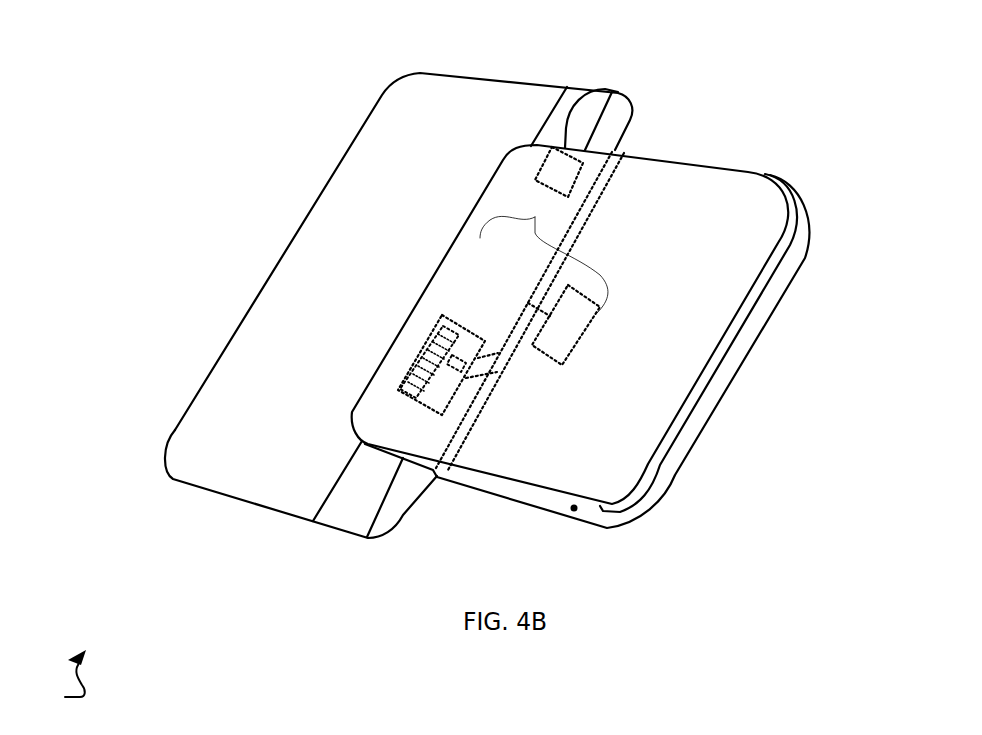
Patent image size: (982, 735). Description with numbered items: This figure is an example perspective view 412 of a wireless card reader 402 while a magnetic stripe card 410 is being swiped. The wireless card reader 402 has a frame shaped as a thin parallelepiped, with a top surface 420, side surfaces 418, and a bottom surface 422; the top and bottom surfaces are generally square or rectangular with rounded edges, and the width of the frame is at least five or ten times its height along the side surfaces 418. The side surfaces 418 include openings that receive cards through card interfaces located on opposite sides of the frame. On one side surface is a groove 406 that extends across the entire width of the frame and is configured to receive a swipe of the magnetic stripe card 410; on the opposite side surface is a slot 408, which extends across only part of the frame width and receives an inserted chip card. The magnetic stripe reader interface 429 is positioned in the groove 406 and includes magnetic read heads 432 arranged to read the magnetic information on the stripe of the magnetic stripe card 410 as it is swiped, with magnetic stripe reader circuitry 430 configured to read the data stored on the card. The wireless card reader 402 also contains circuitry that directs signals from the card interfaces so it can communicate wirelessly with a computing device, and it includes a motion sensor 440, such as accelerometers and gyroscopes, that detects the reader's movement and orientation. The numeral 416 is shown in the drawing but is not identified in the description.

The wireless card reader 402 is at (629, 337).
The groove 406 is at (408, 310).
The slot 408 is at (712, 398).
The magnetic stripe card 410 is at (398, 281).
The perspective view 412 is at (51, 684).
The electronic module 416 is at (468, 390).
The side surfaces 418 is at (797, 260).
The top surface 420 is at (647, 270).
The bottom surface 422 is at (576, 510).
The magnetic stripe reader interface 429 is at (544, 250).
The magnetic stripe reader circuitry 430 is at (553, 333).
The magnetic read heads 432 is at (478, 368).
The motion sensor 440 is at (597, 89).